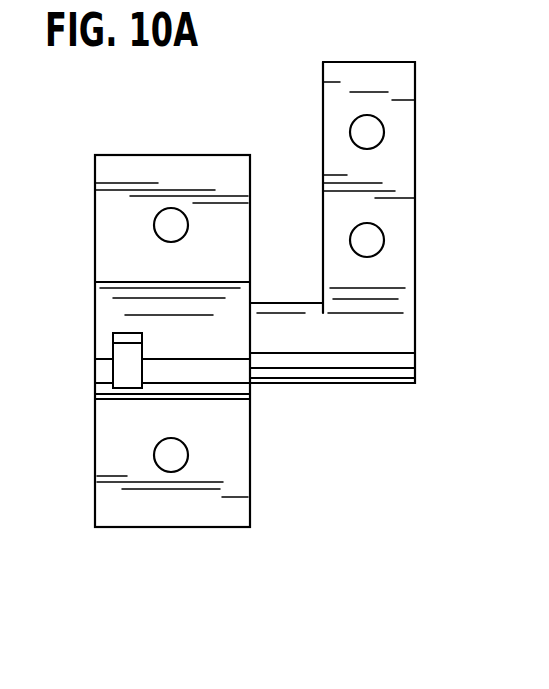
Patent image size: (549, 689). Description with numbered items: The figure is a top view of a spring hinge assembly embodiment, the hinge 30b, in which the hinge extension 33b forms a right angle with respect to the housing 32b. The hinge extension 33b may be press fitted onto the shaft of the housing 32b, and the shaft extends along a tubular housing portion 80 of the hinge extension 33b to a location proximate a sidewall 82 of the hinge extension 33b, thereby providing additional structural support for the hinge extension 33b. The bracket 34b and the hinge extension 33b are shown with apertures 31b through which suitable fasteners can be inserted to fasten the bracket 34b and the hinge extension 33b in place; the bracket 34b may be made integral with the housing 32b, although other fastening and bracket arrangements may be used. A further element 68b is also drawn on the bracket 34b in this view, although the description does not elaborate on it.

The hinge 30b is at (263, 91).
The apertures 31b is at (170, 209).
The housing 32b is at (171, 231).
The hinge extension 33b is at (408, 205).
The bracket 34b is at (98, 197).
The tab 68b is at (130, 355).
The tubular housing portion 80 is at (367, 362).
The sidewall 82 is at (415, 352).